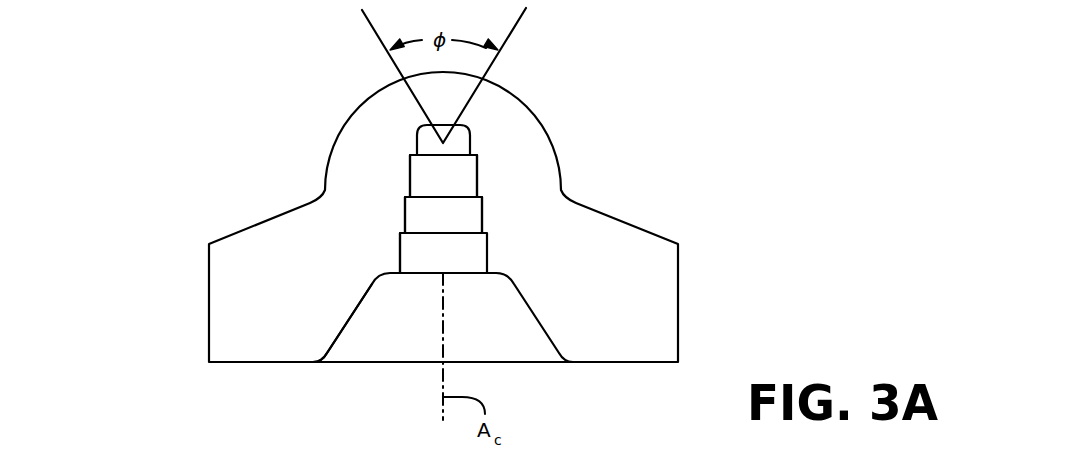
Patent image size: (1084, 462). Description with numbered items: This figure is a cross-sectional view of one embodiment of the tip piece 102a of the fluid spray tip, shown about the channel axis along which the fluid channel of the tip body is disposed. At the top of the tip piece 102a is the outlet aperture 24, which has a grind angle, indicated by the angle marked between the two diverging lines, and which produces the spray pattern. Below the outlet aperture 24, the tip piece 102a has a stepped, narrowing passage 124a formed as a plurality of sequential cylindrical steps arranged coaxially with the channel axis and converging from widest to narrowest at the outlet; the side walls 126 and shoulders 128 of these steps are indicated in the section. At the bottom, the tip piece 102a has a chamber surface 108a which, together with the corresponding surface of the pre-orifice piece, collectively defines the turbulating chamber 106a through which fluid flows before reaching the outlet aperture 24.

The tip piece 102a is at (158, 104).
The outlet aperture 24 is at (441, 124).
The stepped body 124a is at (463, 185).
The side walls 126 is at (400, 245).
The shoulders 128 is at (484, 233).
The turbulating chamber 106a is at (513, 332).
The chamber surface 108a is at (350, 318).